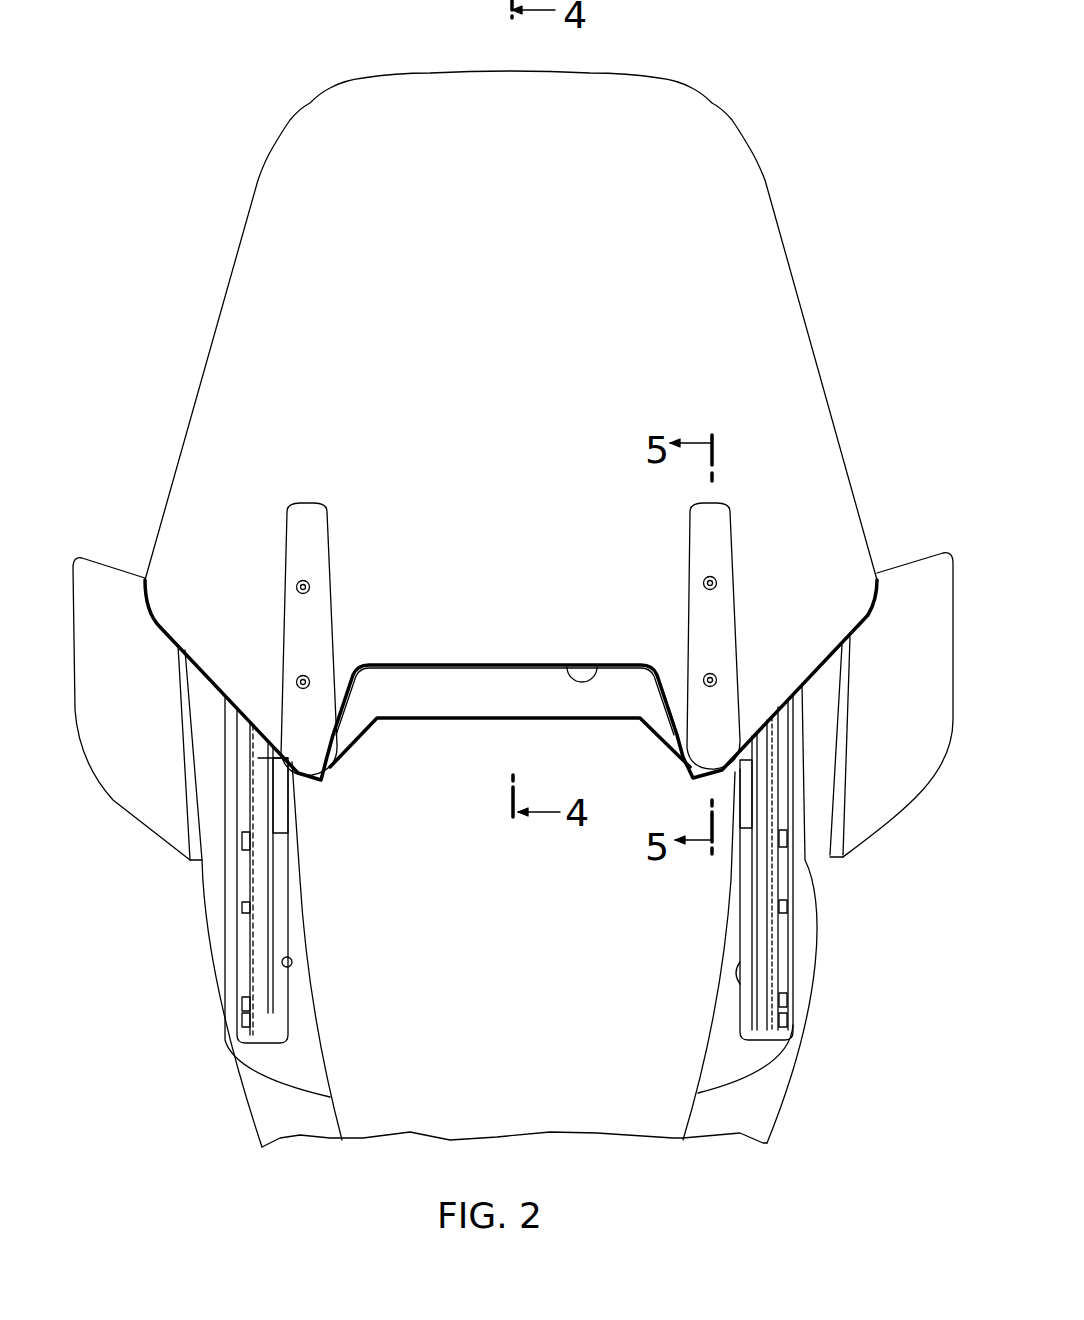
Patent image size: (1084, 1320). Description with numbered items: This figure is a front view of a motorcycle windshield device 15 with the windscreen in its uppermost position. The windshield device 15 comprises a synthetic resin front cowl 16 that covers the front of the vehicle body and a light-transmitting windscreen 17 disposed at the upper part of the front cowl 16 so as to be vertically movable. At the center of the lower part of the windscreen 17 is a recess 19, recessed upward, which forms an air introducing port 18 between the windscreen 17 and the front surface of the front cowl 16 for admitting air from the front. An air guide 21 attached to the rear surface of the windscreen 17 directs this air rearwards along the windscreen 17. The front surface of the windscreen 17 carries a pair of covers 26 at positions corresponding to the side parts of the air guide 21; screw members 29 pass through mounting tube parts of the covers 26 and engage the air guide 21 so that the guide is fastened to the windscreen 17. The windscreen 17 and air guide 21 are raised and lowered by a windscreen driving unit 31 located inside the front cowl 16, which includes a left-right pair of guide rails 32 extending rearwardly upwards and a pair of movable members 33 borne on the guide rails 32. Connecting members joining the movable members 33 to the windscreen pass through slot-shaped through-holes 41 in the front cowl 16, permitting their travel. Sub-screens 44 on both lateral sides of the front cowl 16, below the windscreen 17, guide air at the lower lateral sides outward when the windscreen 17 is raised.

The windshield device 15 is at (170, 467).
The front cowl 16 is at (526, 922).
The windscreen 17 is at (526, 376).
The air introducing port 18 is at (425, 662).
The recess 19 is at (603, 666).
The air guide 21 is at (502, 693).
The cover 26 is at (303, 522).
The screw member 29 is at (311, 585).
The windscreen driving unit 31 is at (787, 861).
The guide rail 32 is at (260, 887).
The movable member 33 is at (278, 803).
The through-hole 41 is at (293, 968).
The sub-screen 44 is at (113, 573).